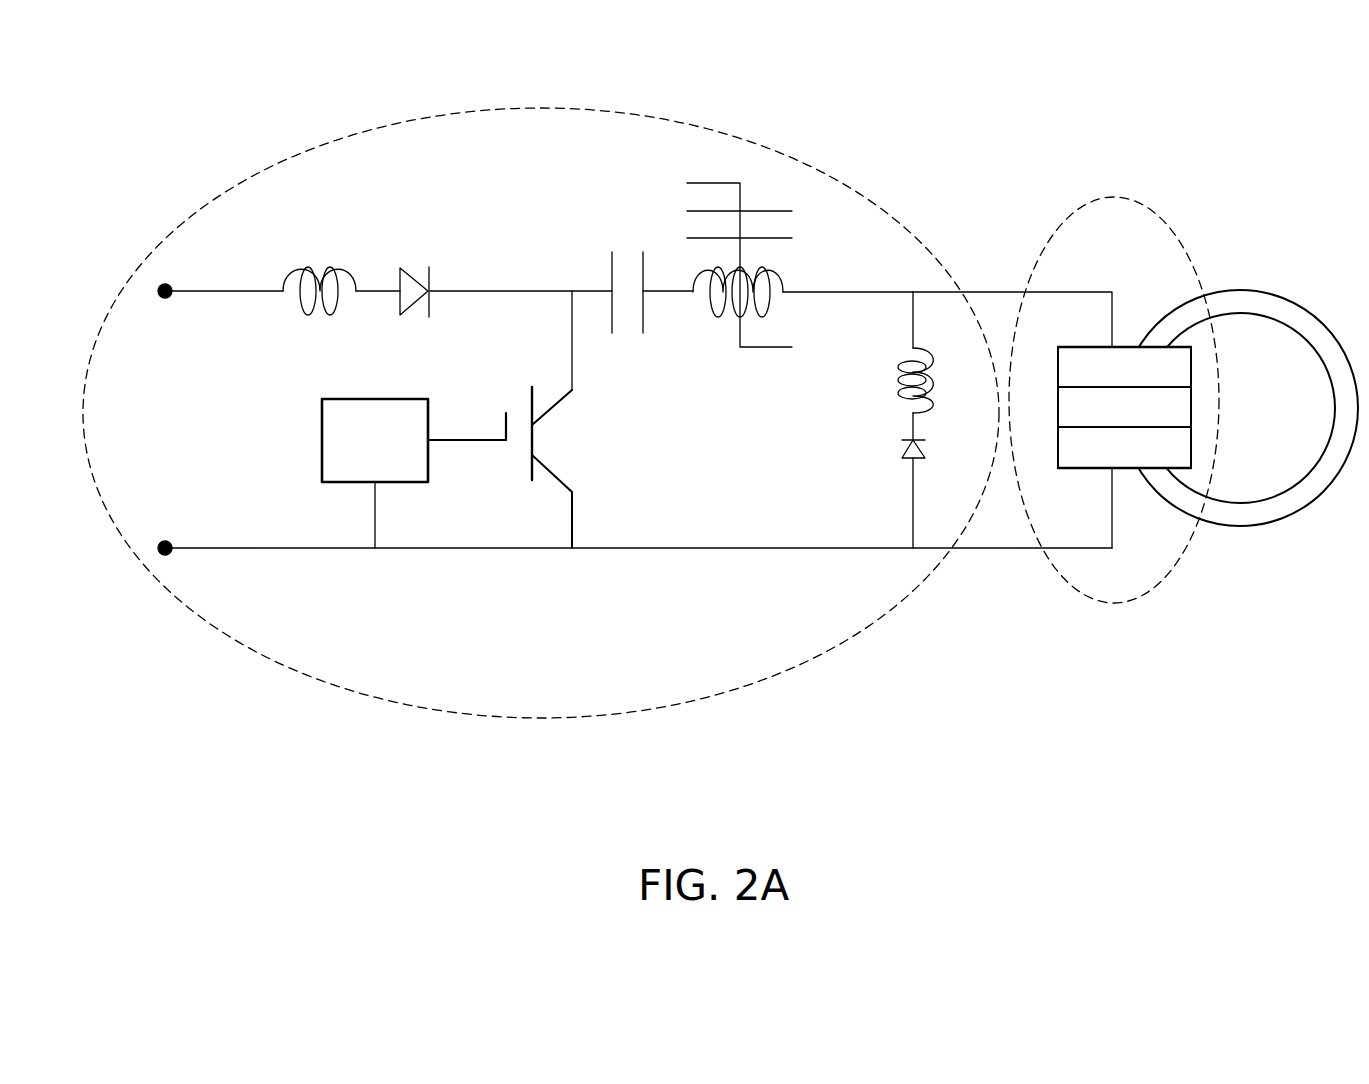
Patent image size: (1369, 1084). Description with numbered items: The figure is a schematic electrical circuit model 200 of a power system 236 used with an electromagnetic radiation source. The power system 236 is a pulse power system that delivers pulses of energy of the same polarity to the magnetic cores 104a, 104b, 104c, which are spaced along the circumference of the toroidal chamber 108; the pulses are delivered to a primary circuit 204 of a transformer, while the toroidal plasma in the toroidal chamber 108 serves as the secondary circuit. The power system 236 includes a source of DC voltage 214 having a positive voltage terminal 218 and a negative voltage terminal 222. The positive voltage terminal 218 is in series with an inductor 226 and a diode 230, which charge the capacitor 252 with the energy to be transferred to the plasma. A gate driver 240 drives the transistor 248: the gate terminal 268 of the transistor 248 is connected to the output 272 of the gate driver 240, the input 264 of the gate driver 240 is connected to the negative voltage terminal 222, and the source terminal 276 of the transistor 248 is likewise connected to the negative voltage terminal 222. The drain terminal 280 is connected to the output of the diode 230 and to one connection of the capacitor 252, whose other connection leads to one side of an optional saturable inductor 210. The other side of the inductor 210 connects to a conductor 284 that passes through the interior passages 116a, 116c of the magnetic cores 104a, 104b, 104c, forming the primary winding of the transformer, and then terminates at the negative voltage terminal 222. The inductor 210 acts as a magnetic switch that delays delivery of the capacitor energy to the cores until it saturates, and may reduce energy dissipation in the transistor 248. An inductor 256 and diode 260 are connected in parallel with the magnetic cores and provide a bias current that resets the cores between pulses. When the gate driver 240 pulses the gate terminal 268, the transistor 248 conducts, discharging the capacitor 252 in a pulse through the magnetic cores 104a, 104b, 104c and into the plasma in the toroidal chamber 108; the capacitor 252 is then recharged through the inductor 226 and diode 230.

The schematic electrical circuit model 200 is at (545, 770).
The primary circuit 204 is at (1113, 196).
The inductor 210 is at (706, 182).
The source of DC voltage 214 is at (176, 414).
The positive voltage terminal 218 is at (172, 287).
The negative voltage terminal 222 is at (172, 556).
The inductor 226 is at (316, 276).
The diode 230 is at (410, 268).
The power system 236 is at (463, 712).
The gate driver 240 is at (321, 443).
The transistor 248 is at (516, 437).
The capacitor 252 is at (611, 278).
The inductor 256 is at (899, 381).
The diode 260 is at (901, 448).
The input 264 is at (373, 520).
The gate terminal 268 is at (495, 436).
The output 272 is at (457, 436).
The source terminal 276 is at (575, 521).
The drain terminal 280 is at (553, 408).
The conductor 284 is at (1089, 290).
The magnetic core 104a is at (1072, 365).
The magnetic core 104b is at (1124, 407).
The magnetic core 104c is at (1072, 455).
The interior passage 116a is at (1133, 345).
The interior passage 116c is at (1129, 472).
The toroidal chamber 108 is at (1247, 527).